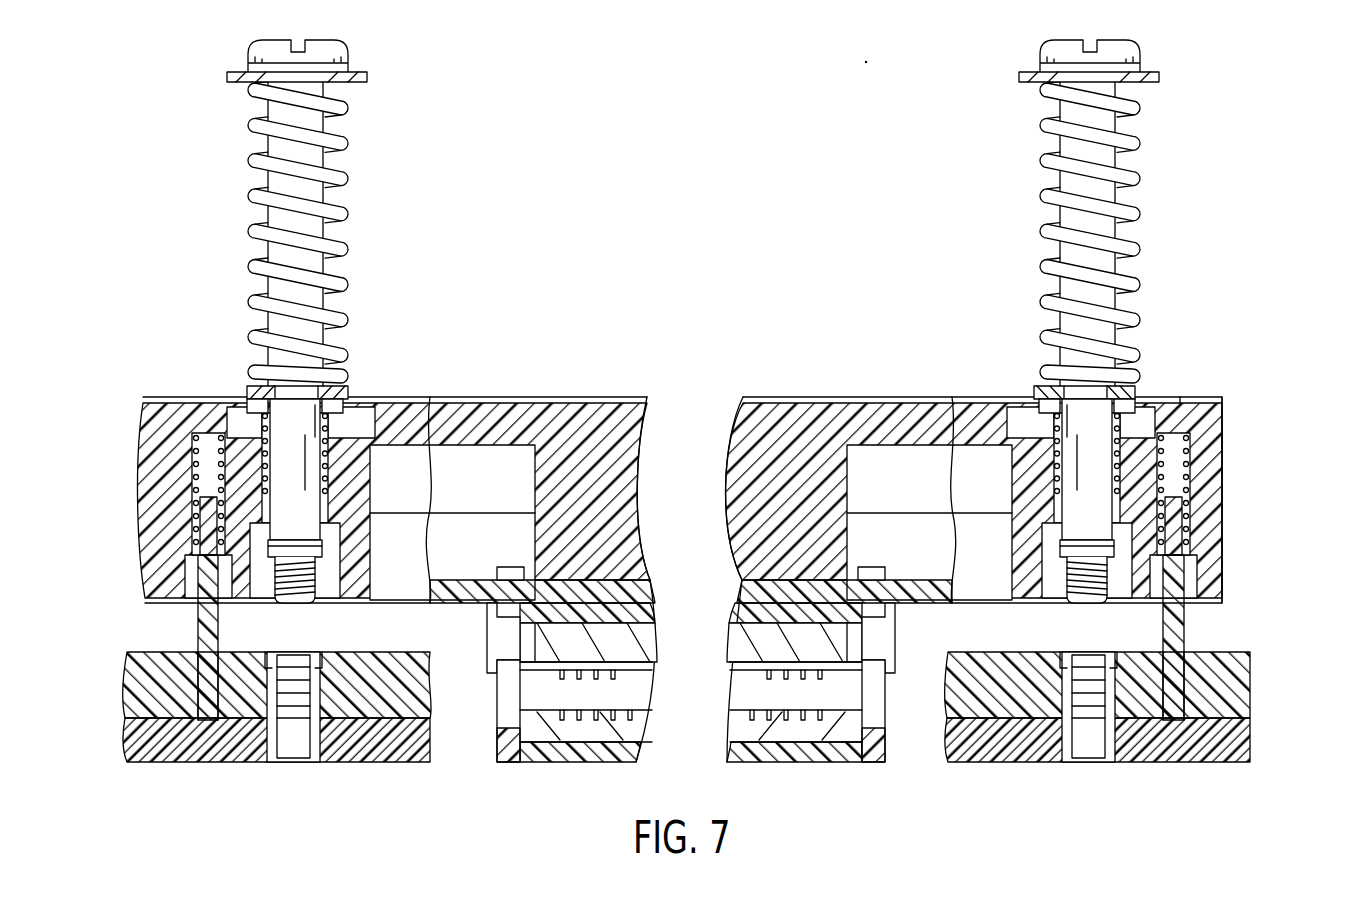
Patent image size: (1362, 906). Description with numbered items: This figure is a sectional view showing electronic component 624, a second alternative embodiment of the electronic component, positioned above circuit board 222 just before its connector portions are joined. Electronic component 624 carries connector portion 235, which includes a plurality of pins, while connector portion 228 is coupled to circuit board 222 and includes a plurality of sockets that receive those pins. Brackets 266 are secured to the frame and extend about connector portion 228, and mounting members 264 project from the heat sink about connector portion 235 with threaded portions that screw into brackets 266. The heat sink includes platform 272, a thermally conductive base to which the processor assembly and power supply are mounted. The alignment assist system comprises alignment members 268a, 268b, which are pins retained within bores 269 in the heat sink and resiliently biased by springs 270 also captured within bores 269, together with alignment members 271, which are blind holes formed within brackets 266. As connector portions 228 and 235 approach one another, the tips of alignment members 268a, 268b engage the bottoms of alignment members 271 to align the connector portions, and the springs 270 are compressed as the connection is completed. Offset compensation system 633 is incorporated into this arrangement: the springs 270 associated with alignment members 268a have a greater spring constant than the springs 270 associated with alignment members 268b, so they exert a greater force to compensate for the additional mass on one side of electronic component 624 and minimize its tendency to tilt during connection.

The mounting member 264 is at (350, 212).
The bore 269 is at (192, 470).
The spring 270 is at (221, 433).
The offset compensation system 633 is at (187, 492).
The alignment member 268a is at (198, 623).
The alignment member 268b is at (1185, 623).
The alignment member 271 is at (198, 652).
The connector portion 228 is at (553, 727).
The connector portion 235 is at (830, 680).
The electronic component 624 is at (880, 397).
The platform 272 is at (1208, 414).
The bracket 266 is at (1240, 686).
The circuit board 222 is at (1236, 742).